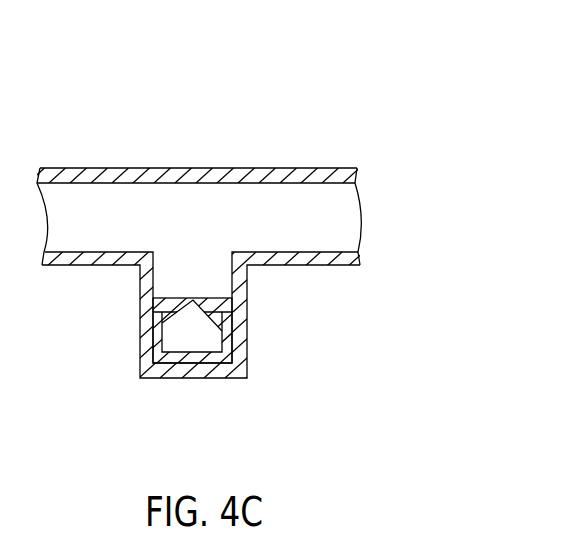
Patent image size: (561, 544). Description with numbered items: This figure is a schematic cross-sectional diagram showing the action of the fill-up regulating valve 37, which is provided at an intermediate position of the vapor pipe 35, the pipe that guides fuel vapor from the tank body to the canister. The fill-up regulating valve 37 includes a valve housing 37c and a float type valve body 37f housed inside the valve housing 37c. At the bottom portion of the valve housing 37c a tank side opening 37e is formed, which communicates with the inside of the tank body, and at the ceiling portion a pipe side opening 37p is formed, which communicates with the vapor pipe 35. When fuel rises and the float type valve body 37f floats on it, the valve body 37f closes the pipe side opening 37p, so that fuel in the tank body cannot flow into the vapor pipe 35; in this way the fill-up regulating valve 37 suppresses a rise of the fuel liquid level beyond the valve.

The vapor pipe 35 is at (143, 186).
The fill-up regulating valve 37 is at (249, 379).
The valve housing 37c is at (245, 332).
The tank side opening 37e is at (192, 367).
The float type valve body 37f is at (188, 332).
The pipe side opening 37p is at (192, 299).